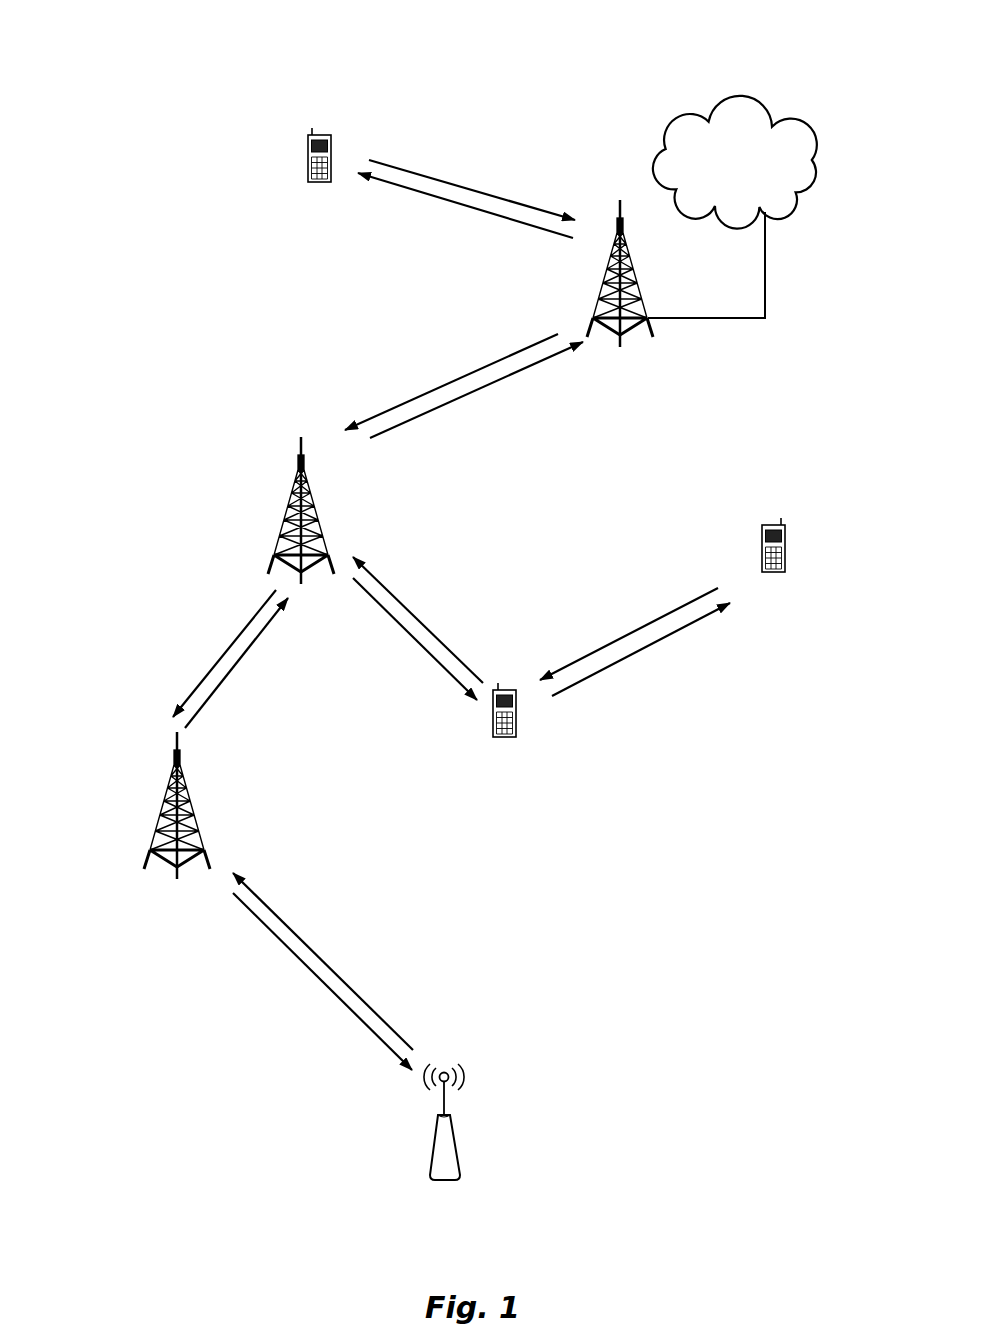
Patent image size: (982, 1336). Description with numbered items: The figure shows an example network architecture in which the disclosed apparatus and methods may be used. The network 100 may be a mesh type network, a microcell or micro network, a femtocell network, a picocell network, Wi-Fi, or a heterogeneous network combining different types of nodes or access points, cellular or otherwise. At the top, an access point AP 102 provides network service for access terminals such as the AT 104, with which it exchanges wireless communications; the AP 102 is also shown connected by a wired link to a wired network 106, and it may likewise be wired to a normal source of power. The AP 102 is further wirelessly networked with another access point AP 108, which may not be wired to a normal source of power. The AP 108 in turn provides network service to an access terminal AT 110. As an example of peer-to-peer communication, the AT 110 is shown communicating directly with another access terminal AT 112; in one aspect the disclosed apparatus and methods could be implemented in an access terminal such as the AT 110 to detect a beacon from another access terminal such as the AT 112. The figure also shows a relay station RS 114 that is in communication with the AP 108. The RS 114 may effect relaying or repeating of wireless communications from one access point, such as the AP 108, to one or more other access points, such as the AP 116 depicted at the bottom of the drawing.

The network 100 is at (140, 66).
The access point 102 is at (636, 273).
The access terminal 104 is at (308, 160).
The wired network 106 is at (823, 176).
The access point 108 is at (316, 497).
The access terminal 110 is at (493, 724).
The access terminal 112 is at (762, 558).
The relay station 114 is at (193, 804).
The access point 116 is at (430, 1136).